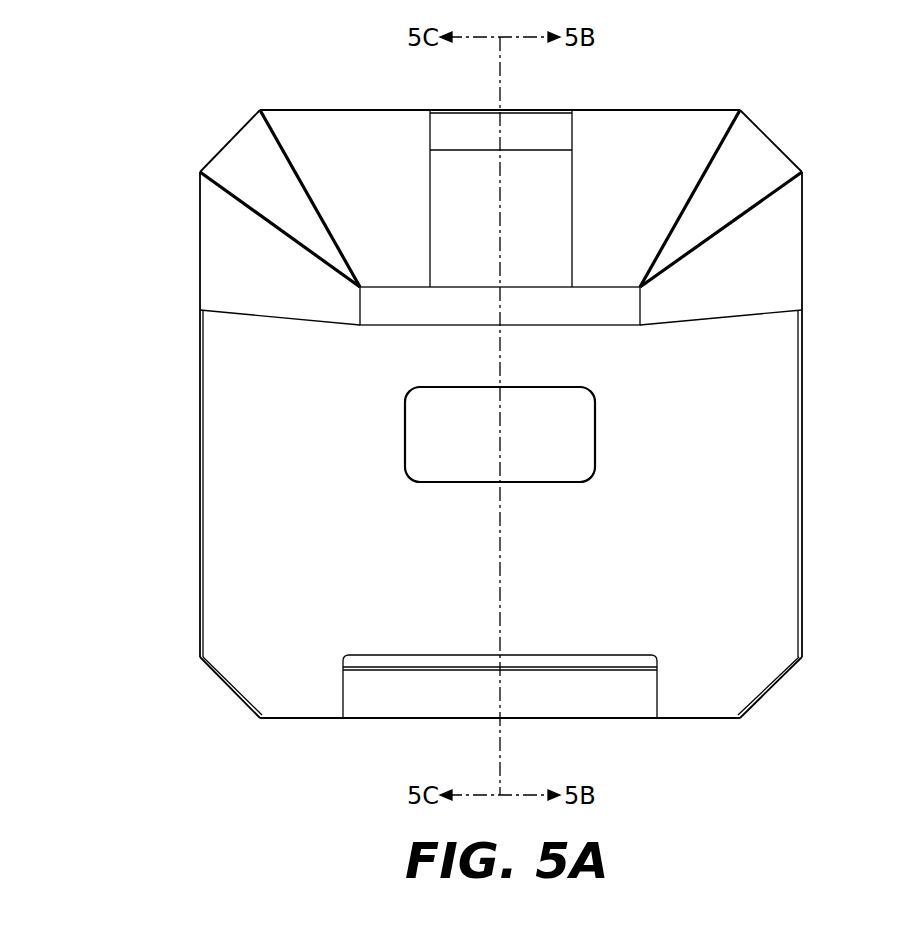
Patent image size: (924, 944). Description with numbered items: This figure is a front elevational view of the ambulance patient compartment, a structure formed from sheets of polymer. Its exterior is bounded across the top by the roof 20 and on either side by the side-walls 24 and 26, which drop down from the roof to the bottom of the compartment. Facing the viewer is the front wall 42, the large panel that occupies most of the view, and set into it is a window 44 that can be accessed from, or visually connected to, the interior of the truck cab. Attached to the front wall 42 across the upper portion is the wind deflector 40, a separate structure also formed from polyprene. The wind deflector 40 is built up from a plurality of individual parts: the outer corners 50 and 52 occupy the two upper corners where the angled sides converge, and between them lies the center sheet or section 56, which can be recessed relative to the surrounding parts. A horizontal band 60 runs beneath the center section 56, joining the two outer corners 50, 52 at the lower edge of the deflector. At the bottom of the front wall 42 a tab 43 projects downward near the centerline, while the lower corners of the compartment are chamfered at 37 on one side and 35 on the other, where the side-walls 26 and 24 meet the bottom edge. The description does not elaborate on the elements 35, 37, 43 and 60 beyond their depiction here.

The roof 20 is at (628, 110).
The side-wall 24 is at (802, 492).
The side-wall 26 is at (200, 420).
The chamfered corner 35 is at (768, 697).
The chamfered corner 37 is at (230, 695).
The wind deflector 40 is at (806, 219).
The front wall 42 is at (500, 621).
The bottom tab 43 is at (655, 698).
The window 44 is at (594, 421).
The outer corner 50 is at (226, 258).
The outer corner 52 is at (780, 273).
The center sheet or section 56 is at (501, 198).
The cross band 60 is at (405, 312).